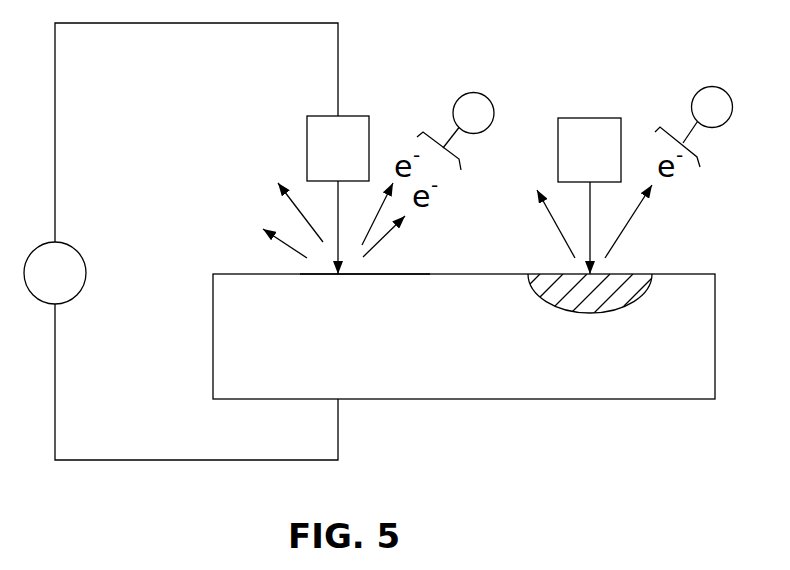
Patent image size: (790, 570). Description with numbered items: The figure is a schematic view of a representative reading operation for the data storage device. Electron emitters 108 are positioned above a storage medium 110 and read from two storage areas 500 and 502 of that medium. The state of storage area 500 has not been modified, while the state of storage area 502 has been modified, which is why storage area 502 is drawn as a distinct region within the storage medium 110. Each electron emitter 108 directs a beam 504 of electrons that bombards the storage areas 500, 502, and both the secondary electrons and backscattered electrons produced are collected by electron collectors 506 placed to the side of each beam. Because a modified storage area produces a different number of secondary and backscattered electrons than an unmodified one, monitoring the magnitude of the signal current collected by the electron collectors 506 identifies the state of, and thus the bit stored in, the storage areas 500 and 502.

The electron emitter 108 is at (322, 124).
The beam of electrons 504 is at (337, 210).
The electron collector 506 is at (473, 92).
The storage area 500 is at (368, 274).
The storage area 502 is at (636, 274).
The storage medium 110 is at (560, 420).